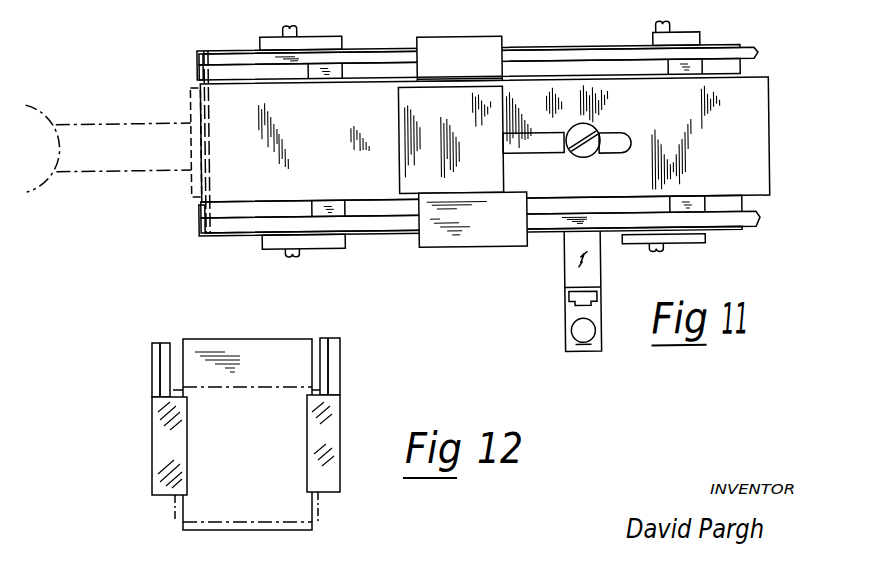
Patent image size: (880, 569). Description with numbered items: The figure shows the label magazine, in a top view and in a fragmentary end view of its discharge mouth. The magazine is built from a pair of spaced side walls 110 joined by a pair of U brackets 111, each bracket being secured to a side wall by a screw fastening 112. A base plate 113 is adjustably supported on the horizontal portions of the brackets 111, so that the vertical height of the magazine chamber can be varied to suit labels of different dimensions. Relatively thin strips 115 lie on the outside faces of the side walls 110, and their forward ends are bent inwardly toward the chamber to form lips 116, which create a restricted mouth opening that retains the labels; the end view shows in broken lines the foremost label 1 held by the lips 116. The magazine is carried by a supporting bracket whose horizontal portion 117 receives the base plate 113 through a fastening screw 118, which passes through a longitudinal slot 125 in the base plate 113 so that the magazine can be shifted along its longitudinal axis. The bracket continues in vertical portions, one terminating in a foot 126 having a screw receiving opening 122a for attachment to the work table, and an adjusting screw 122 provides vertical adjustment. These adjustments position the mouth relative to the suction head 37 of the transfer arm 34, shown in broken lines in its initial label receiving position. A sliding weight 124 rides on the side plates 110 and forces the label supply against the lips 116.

In FIG. 11, the transfer arm 34 is at (33, 106).
In FIG. 11, the suction head 37 is at (190, 190).
In FIG. 11, the side walls 110 is at (758, 59).
In FIG. 12, the side walls 110 is at (328, 340).
In FIG. 11, the U brackets 111 is at (325, 39).
In FIG. 11, the screw fastening 112 is at (295, 28).
In FIG. 11, the base plate 113 is at (768, 175).
In FIG. 12, the base plate 113 is at (274, 532).
In FIG. 11, the thin strips 115 is at (203, 51).
In FIG. 12, the thin strips 115 is at (342, 362).
In FIG. 11, the lips 116 is at (199, 72).
In FIG. 12, the lips 116 is at (330, 398).
In FIG. 11, the horizontal portion 117 is at (598, 270).
In FIG. 11, the fastening screw 118 is at (588, 146).
In FIG. 11, the adjusting screw 122 is at (566, 307).
In FIG. 11, the screw receiving opening 122a is at (567, 342).
In FIG. 11, the sliding weight 124 is at (446, 193).
In FIG. 11, the longitudinal slot 125 is at (505, 137).
In FIG. 11, the foot 126 is at (563, 326).
In FIG. 12, the label 1 is at (131, 529).